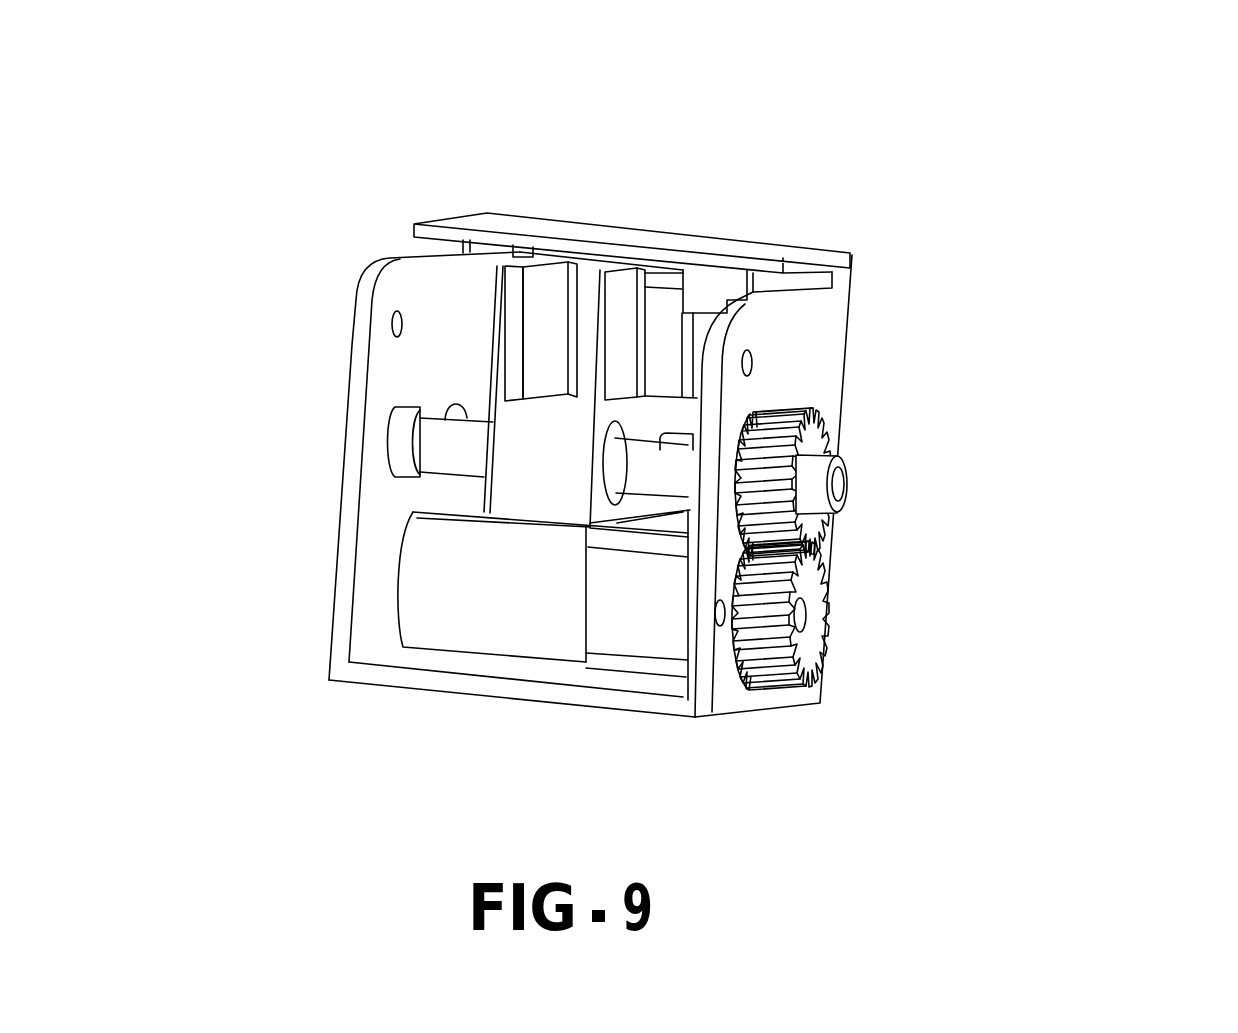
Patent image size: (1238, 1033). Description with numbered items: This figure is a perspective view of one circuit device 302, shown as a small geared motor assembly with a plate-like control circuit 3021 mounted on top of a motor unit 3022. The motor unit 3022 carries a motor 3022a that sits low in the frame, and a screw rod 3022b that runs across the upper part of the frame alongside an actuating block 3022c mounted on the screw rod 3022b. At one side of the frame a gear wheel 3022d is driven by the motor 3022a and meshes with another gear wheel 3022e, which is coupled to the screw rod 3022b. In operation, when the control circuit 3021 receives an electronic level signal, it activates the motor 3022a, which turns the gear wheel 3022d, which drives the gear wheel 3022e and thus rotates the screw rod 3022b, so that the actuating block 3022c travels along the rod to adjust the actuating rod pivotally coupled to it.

The circuit device 302 is at (1022, 221).
The control circuit 3021 is at (713, 245).
The motor unit 3022 is at (820, 363).
The motor 3022a is at (433, 595).
The screw rod 3022b is at (433, 452).
The actuating block 3022c is at (510, 387).
The gear wheel 3022d is at (800, 647).
The gear wheel 3022e is at (832, 475).